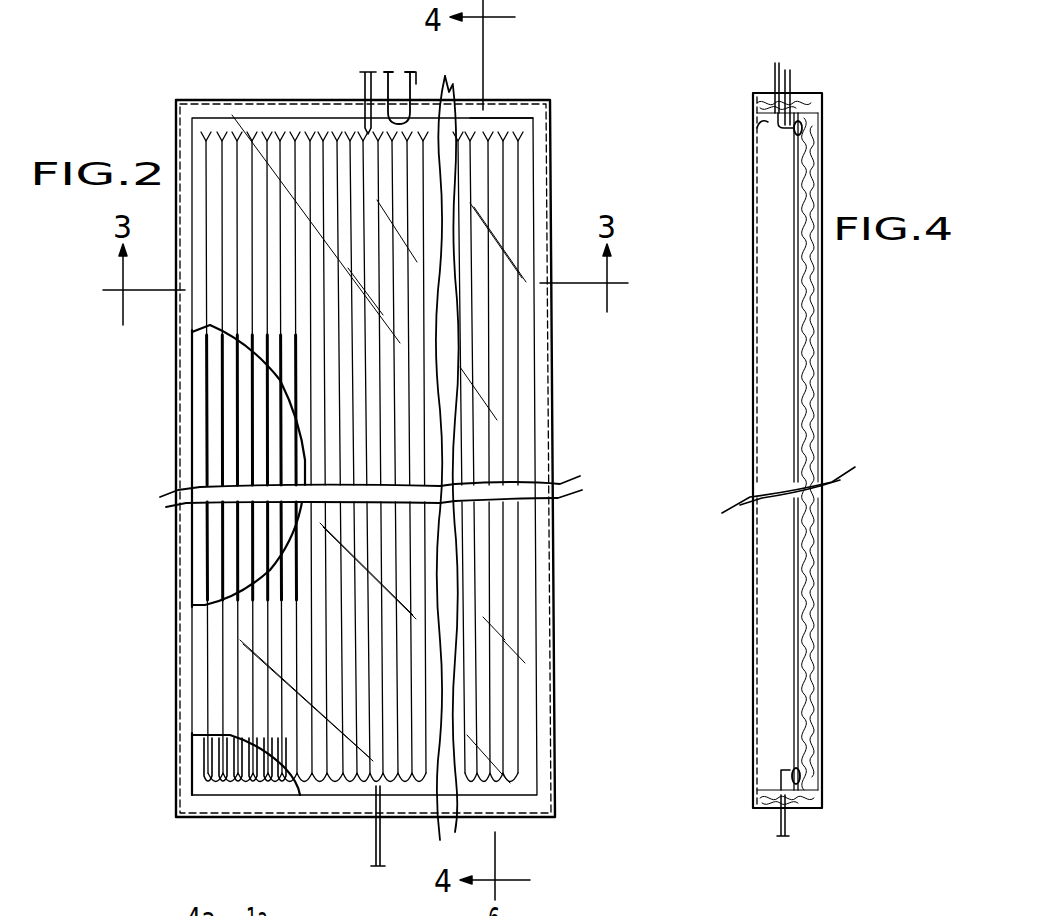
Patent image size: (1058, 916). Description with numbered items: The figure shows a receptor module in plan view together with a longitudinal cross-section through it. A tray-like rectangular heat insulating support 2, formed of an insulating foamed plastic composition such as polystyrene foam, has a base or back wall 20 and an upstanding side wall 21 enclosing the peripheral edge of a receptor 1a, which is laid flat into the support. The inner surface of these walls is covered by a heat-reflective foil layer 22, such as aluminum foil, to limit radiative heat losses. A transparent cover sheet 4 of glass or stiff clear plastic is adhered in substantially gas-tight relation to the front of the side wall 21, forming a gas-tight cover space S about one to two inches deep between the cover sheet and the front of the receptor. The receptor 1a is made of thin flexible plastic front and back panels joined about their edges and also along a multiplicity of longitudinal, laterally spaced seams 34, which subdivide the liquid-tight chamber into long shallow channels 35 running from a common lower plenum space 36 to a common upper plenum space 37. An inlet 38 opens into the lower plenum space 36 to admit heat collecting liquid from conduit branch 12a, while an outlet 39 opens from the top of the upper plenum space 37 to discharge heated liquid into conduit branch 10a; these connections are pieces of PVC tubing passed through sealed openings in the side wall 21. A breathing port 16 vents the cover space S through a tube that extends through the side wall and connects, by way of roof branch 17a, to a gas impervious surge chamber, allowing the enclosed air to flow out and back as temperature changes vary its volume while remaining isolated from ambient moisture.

In FIG. 2, the receptor 1a is at (231, 378).
In FIG. 4, the receptor 1a is at (791, 296).
In FIG. 2, the heat insulating support 2 is at (553, 170).
In FIG. 2, the transparent cover sheet 4 is at (495, 362).
In FIG. 4, the transparent cover sheet 4 is at (755, 392).
In FIG. 2, the conduit branch 10a is at (364, 77).
In FIG. 4, the conduit branch 10a is at (774, 78).
In FIG. 2, the conduit branch 12a is at (383, 842).
In FIG. 4, the conduit branch 12a is at (780, 830).
In FIG. 2, the breathing port 16 is at (394, 83).
In FIG. 4, the breathing port 16 is at (812, 108).
In FIG. 2, the roof branch 17a is at (430, 48).
In FIG. 4, the roof branch 17a is at (792, 84).
In FIG. 4, the back wall 20 is at (818, 402).
In FIG. 4, the side wall 21 is at (800, 800).
In FIG. 2, the heat-reflective foil layer 22 is at (208, 575).
In FIG. 4, the heat-reflective foil layer 22 is at (758, 132).
In FIG. 2, the seams 34 is at (232, 548).
In FIG. 4, the channels 35 is at (798, 338).
In FIG. 2, the plenum space 36 is at (255, 803).
In FIG. 4, the plenum space 36 is at (802, 776).
In FIG. 2, the plenum space 37 is at (497, 128).
In FIG. 4, the plenum space 37 is at (802, 132).
In FIG. 4, the inlet 38 is at (783, 776).
In FIG. 4, the outlet 39 is at (783, 128).
In FIG. 4, the cover space S is at (777, 645).